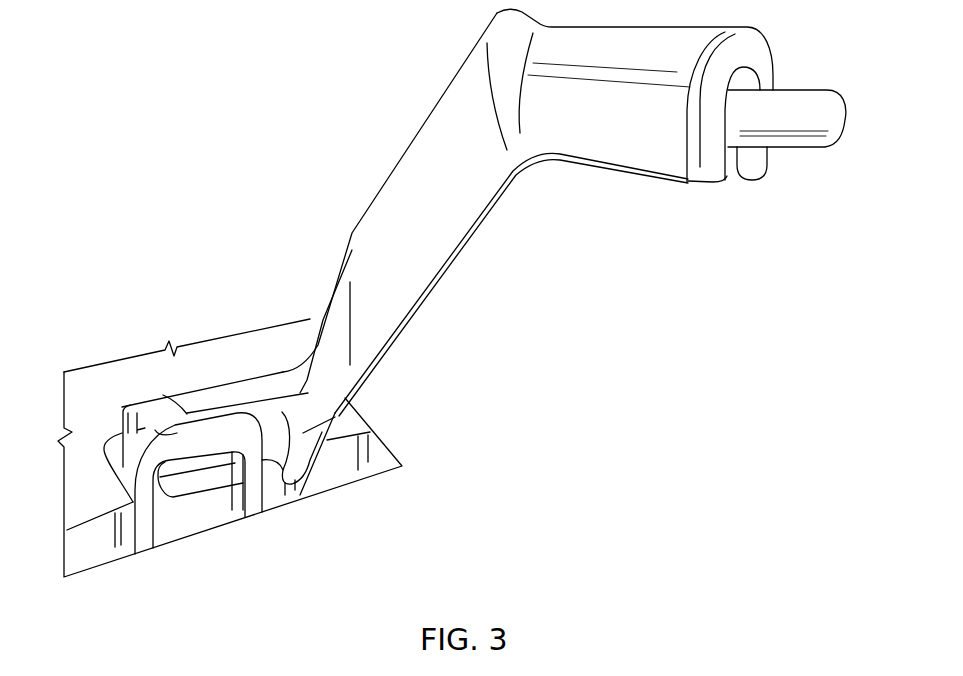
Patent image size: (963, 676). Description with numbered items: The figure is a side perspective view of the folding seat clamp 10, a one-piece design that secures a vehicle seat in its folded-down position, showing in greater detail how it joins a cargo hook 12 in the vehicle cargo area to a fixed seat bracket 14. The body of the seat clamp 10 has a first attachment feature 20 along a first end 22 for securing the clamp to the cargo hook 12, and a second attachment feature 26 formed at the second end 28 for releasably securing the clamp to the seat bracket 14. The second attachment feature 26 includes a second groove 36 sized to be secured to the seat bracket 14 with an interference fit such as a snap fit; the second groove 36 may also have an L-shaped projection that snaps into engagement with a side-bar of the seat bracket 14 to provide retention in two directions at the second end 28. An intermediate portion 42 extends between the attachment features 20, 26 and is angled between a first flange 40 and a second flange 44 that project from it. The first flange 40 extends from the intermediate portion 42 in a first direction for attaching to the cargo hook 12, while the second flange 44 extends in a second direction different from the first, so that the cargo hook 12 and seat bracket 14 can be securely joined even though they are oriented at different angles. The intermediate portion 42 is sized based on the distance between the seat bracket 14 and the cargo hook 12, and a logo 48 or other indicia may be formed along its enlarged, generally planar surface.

The folding seat clamp 10 is at (270, 334).
The cargo hook 12 is at (136, 557).
The seat bracket 14 is at (773, 82).
The first attachment feature 20 is at (233, 445).
The first end 22 is at (122, 433).
The second attachment feature 26 is at (730, 184).
The second end 28 is at (687, 184).
The second groove 36 is at (740, 183).
The first flange 40 is at (293, 383).
The intermediate portion 42 is at (462, 173).
The second flange 44 is at (602, 132).
The logo 48 is at (410, 267).